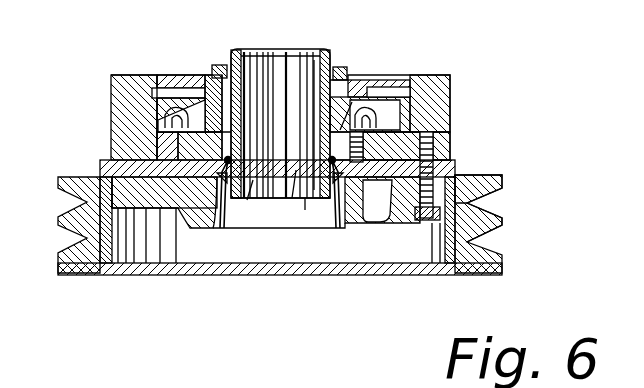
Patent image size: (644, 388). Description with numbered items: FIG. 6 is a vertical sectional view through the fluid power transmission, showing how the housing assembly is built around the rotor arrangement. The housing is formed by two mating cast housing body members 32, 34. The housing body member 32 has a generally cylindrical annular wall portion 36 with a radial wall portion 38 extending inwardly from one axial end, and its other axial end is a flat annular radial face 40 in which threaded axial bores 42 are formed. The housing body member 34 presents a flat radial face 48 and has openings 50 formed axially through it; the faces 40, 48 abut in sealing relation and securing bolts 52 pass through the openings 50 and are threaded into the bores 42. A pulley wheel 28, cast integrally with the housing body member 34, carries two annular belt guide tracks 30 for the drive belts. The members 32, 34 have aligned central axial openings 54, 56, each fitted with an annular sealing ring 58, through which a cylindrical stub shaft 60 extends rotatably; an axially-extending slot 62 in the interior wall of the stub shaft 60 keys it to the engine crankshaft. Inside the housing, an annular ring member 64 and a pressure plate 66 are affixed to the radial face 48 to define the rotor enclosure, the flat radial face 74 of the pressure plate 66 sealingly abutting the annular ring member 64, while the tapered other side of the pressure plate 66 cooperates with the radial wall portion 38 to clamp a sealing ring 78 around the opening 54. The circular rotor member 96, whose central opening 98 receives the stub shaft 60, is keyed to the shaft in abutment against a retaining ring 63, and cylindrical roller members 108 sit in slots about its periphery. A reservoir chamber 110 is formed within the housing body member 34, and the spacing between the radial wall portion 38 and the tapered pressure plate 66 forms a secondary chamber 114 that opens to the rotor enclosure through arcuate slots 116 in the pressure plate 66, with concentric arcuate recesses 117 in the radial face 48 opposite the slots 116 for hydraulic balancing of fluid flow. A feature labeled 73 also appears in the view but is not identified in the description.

The pulley wheel 28 is at (503, 233).
The annular belt guide tracks 30 is at (58, 185).
The housing body member 32 is at (111, 95).
The housing body member 34 is at (111, 165).
The annular wall portion 36 is at (438, 78).
The radial wall portion 38 is at (158, 75).
The annular radial face 40 is at (455, 153).
The threaded axial bores 42 is at (451, 133).
The flat radial face 48 is at (462, 175).
The openings 50 is at (480, 205).
The securing bolts 52 is at (440, 272).
The central axial opening 54 is at (334, 72).
The central axial opening 56 is at (338, 220).
The annular sealing ring 58 is at (215, 72).
The stub shaft 60 is at (320, 50).
The axially-extending slot 62 is at (290, 62).
The retaining ring 63 is at (311, 211).
The annular ring member 64 is at (451, 118).
The pressure plate 66 is at (451, 92).
The bore 73 is at (321, 92).
The flat radial face 74 is at (158, 120).
The sealing ring 78 is at (357, 67).
The rotor member 96 is at (292, 198).
The central opening 98 is at (250, 198).
The cylindrical roller member 108 is at (451, 104).
The reservoir chamber 110 is at (372, 268).
The secondary chamber 114 is at (392, 92).
The arcuate slots 116 is at (200, 106).
The concentric arcuate recesses 117 is at (293, 215).